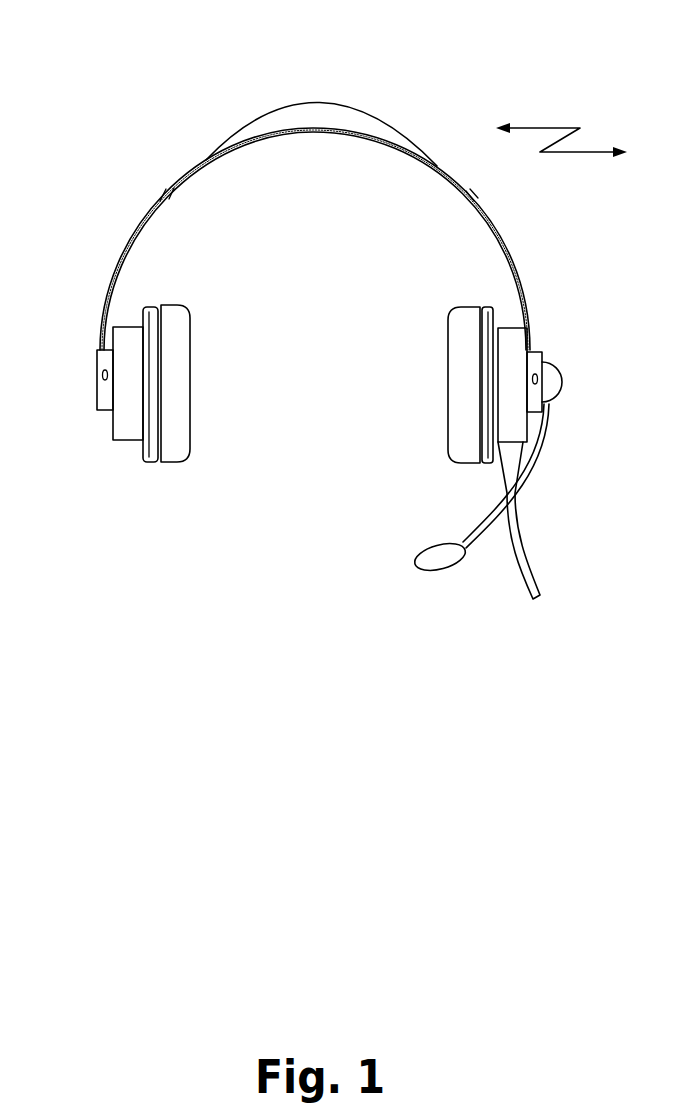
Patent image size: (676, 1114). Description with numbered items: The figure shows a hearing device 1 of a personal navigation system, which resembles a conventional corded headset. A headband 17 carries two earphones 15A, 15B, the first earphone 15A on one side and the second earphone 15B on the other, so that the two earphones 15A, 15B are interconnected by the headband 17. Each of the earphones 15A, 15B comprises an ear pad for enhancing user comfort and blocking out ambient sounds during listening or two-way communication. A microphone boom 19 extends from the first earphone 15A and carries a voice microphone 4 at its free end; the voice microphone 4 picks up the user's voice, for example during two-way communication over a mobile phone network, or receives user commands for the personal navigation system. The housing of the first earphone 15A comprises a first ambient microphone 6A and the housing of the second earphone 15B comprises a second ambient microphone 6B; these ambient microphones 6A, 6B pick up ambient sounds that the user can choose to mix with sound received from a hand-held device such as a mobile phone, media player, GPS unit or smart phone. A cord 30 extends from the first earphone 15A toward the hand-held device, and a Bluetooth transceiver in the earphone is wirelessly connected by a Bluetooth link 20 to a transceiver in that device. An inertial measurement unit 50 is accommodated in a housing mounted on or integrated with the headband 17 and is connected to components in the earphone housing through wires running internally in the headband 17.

The headset 1 is at (163, 132).
The inertial measurement unit 50 is at (306, 114).
The headband 17 is at (393, 142).
The Bluetooth link 20 is at (558, 127).
The first earphone 15A is at (429, 279).
The second earphone 15B is at (200, 281).
The first ambient microphone 6A is at (543, 382).
The second ambient microphone 6B is at (103, 374).
The microphone boom 19 is at (547, 440).
The voice microphone 4 is at (436, 556).
The cord 30 is at (523, 558).